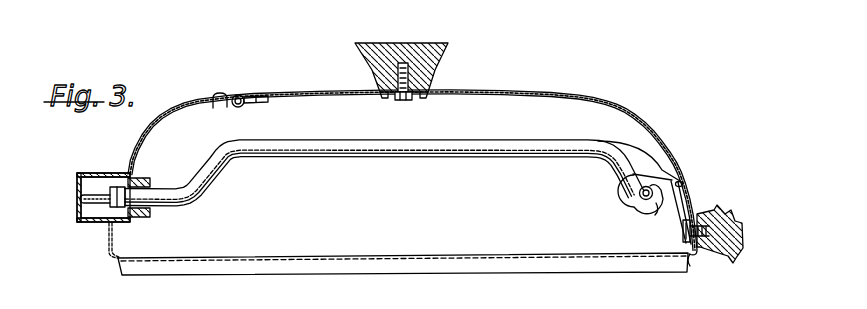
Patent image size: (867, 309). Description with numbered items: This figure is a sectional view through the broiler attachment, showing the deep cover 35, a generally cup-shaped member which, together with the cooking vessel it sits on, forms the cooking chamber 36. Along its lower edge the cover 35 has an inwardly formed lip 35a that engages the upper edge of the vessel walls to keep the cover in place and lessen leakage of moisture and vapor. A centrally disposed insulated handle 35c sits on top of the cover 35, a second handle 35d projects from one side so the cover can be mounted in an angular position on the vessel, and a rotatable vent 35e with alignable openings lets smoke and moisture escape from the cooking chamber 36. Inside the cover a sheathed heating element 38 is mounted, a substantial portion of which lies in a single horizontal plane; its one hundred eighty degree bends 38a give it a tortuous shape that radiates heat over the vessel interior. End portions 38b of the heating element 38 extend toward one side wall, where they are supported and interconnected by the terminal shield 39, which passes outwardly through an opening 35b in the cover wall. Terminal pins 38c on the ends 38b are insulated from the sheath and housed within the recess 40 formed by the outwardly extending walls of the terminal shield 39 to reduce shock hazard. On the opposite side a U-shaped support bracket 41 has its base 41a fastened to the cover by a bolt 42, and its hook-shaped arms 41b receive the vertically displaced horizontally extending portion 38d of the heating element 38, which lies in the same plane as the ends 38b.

The deep cover 35 is at (553, 92).
The inwardly formed lip 35a is at (693, 258).
The opening in the wall of the cover 35b is at (133, 178).
The centrally disposed insulated handle 35c is at (448, 46).
The second handle 35d is at (737, 225).
The rotatable vent 35e is at (222, 92).
The cooking chamber 36 is at (380, 188).
The sheathed heating element 38 is at (468, 153).
The 180 degree bends 38a is at (577, 142).
The end portions of the heating element 38b is at (146, 207).
The terminal pins 38c is at (82, 201).
The vertically displaced horizontally extending portion 38d is at (652, 200).
The terminal shield 39 is at (101, 172).
The recess 40 is at (85, 188).
The support bracket 41 is at (659, 169).
The base of the support bracket 41a is at (682, 181).
The hook-shaped arms 41b is at (630, 194).
The bolt 42 is at (684, 235).